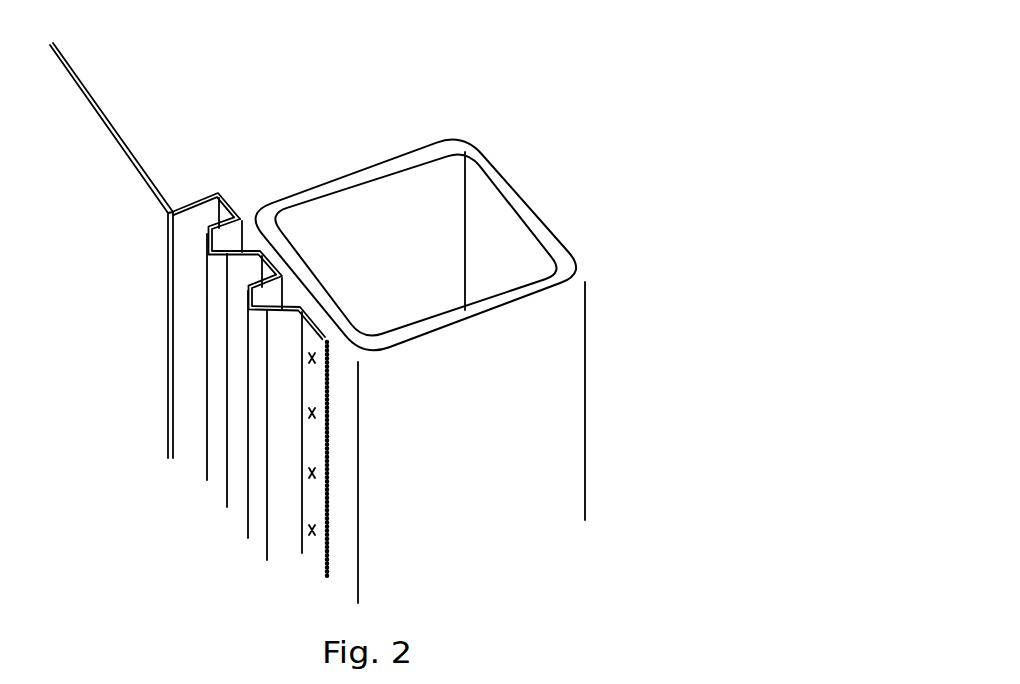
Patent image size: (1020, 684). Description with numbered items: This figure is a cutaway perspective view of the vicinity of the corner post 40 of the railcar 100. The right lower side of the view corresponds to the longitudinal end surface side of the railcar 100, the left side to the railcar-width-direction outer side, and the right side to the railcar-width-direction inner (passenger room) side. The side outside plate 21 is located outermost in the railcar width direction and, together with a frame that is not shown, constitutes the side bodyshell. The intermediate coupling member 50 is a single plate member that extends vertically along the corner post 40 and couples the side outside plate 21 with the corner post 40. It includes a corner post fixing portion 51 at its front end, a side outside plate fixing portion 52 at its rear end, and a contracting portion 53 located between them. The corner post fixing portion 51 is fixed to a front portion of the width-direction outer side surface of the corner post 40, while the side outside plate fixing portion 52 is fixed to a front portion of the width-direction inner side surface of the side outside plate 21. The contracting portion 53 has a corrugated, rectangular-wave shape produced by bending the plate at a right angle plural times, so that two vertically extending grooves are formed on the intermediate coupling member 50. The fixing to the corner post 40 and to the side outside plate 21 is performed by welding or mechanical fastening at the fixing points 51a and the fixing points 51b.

The railcar 100 is at (448, 90).
The side outside plate 21 is at (127, 157).
The corner post 40 is at (467, 133).
The intermediate coupling member 50 is at (205, 192).
The corner post fixing portion 51 is at (314, 351).
The fixing points 51a is at (327, 393).
The fixing points 51b is at (313, 358).
The side outside plate fixing portion 52 is at (163, 193).
The contracting portion 53 is at (235, 185).